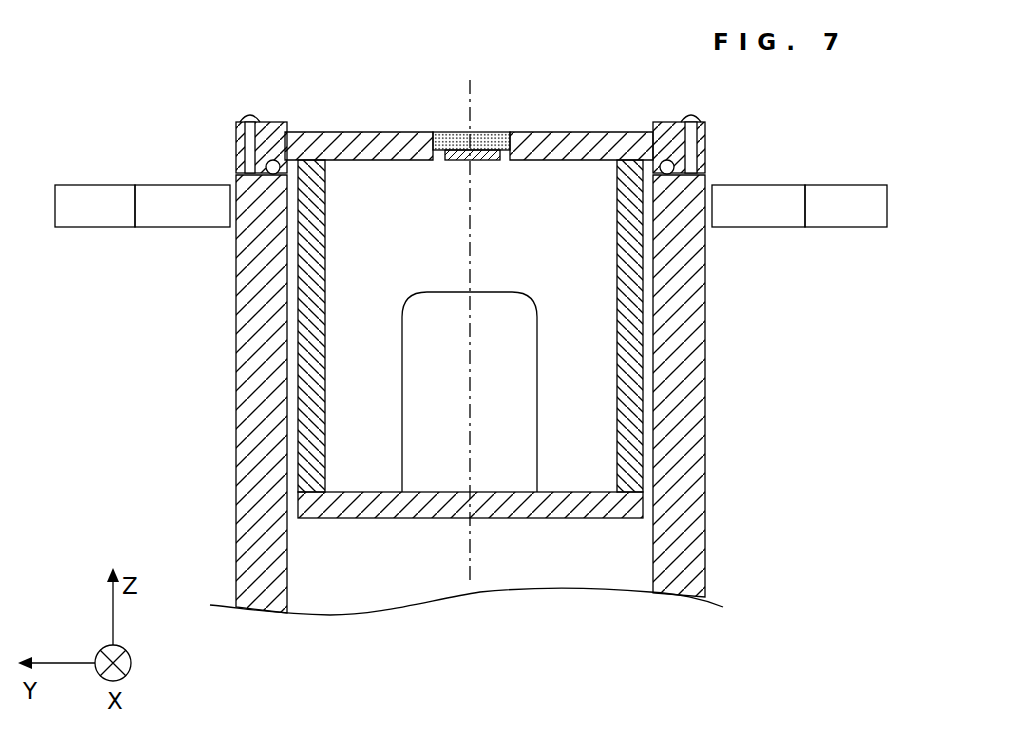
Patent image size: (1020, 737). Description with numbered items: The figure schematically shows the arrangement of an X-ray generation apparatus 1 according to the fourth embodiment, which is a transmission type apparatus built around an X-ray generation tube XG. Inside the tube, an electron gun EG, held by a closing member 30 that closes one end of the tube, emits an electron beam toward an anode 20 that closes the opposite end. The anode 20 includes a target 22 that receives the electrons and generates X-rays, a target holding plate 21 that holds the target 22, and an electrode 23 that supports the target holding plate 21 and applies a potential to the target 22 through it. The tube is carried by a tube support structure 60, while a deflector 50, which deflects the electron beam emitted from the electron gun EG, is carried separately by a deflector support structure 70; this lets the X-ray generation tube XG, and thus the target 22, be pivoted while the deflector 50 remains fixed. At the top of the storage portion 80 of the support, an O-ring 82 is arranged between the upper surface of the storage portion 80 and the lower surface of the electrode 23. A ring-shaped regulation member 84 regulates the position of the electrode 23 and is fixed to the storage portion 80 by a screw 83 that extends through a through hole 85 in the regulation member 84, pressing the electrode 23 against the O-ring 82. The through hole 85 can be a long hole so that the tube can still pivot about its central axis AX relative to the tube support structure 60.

The X-ray generation apparatus 1 is at (552, 628).
The anode 20 is at (469, 101).
The target holding plate 21 is at (486, 132).
The target 22 is at (498, 150).
The electrode 23 is at (563, 132).
The closing member 30 is at (574, 518).
The deflector 50 is at (177, 185).
The tube support structure 60 is at (435, 394).
The deflector support structure 70 is at (87, 185).
The storage portion 80 is at (236, 255).
The O-ring 82 is at (274, 160).
The screw 83 is at (249, 116).
The regulation member 84 is at (660, 125).
The through hole 85 is at (706, 138).
The X-ray generation tube XG is at (366, 116).
The electron gun EG is at (537, 342).
The axis AX is at (471, 560).